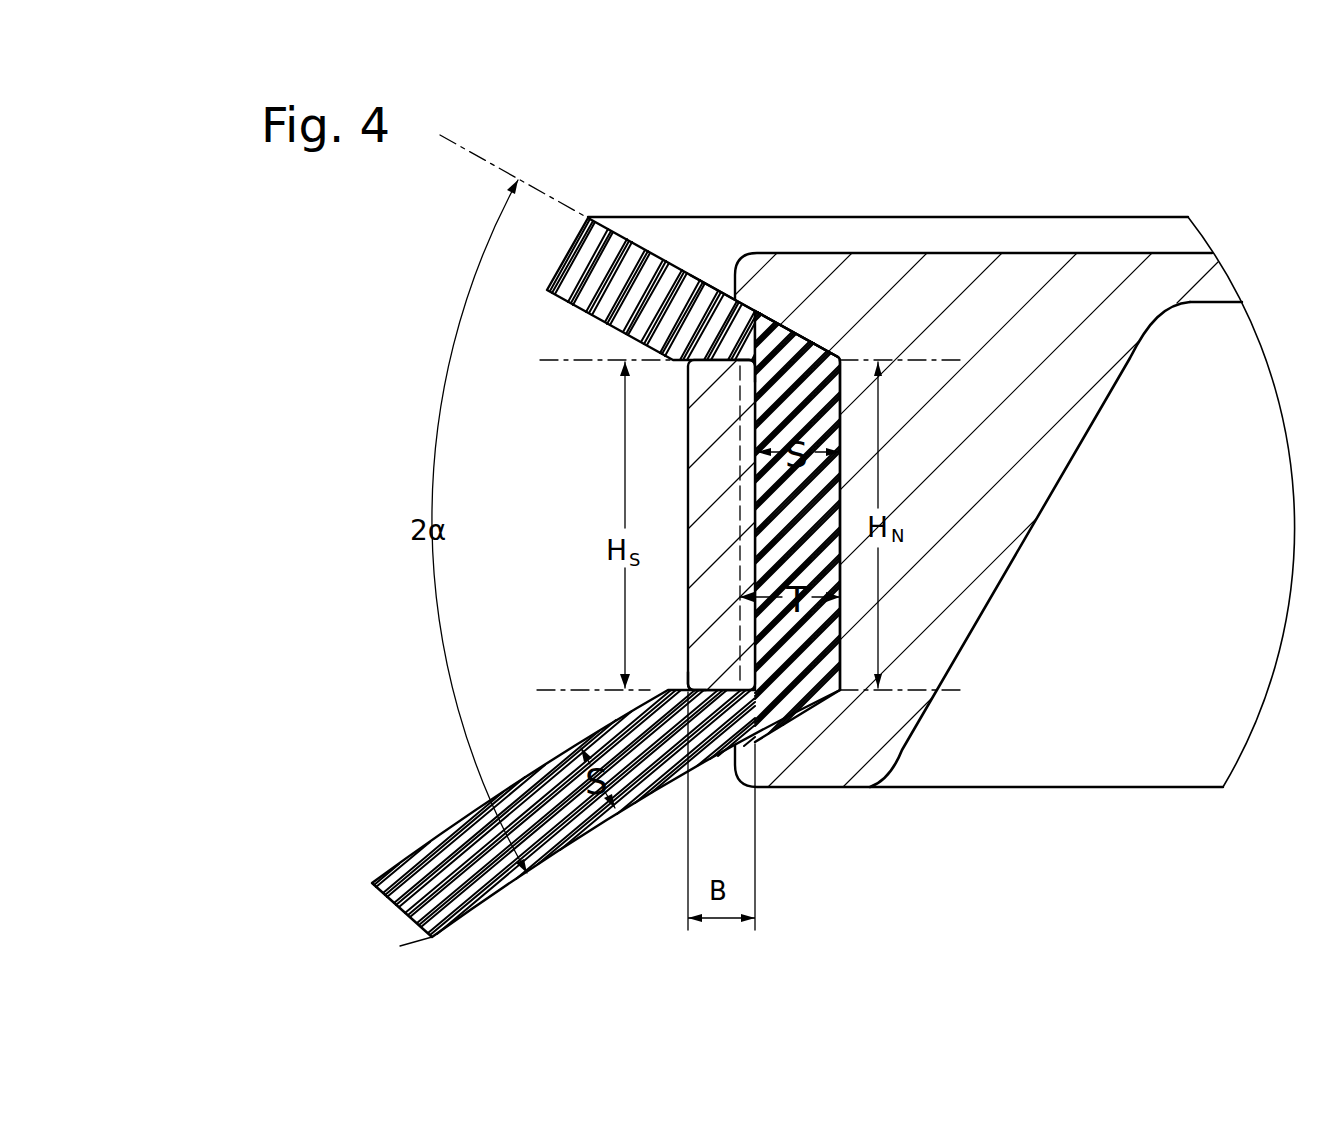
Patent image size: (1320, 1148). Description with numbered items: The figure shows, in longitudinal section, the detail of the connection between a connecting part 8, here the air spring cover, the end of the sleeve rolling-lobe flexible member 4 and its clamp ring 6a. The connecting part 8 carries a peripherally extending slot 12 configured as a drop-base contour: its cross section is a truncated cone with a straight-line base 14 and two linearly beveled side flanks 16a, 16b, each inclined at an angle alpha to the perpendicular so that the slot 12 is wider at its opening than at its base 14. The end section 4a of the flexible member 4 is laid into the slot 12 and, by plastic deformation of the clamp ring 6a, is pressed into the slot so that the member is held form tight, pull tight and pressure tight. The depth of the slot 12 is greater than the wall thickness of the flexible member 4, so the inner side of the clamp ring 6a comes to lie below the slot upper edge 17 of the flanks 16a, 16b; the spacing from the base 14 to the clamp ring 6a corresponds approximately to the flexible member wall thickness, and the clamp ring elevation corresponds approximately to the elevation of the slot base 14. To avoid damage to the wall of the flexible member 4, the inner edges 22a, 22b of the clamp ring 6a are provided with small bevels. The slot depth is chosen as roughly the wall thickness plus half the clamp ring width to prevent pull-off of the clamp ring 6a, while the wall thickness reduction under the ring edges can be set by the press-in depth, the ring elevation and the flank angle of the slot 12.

The sleeve rolling-lobe flexible member 4 is at (440, 883).
The end section of the sleeve rolling-lobe flexible member 4a is at (737, 300).
The clamp ring 6a is at (718, 522).
The connecting part (air spring cover) 8 is at (1012, 363).
The slot 12 is at (792, 515).
The slot base 14 is at (828, 655).
The side flank of the slot 16a is at (775, 328).
The side flank of the slot 16b is at (776, 718).
The slot upper edge 17 is at (703, 330).
The inner edge of the clamp ring 22a is at (750, 364).
The inner edge of the clamp ring 22b is at (697, 688).